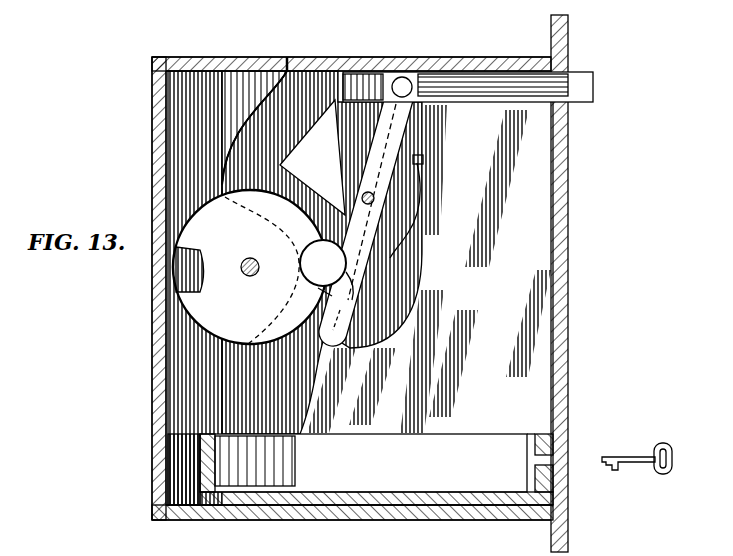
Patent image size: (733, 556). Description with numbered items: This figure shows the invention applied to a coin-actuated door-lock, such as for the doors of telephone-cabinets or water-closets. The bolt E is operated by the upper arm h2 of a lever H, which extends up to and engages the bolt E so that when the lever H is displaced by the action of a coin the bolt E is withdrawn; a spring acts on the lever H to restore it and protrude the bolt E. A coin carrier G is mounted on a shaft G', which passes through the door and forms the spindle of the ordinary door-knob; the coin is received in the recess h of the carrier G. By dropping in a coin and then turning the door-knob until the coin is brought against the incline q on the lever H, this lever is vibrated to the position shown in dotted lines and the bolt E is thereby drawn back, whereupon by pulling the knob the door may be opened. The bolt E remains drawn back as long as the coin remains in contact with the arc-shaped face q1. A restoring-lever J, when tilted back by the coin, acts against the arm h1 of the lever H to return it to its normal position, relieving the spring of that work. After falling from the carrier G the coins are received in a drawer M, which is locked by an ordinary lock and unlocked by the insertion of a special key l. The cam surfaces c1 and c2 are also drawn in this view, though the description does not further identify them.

The bolt E is at (468, 87).
The cam edge c1 is at (254, 128).
The cam body c2 is at (322, 252).
The carrier G is at (250, 267).
The shaft G' is at (251, 282).
The recess h is at (301, 258).
The incline q is at (349, 270).
The arc-shaped face q1 is at (332, 298).
The arm h1 is at (342, 308).
The upper arm h2 is at (372, 202).
The lever H is at (367, 210).
The restoring-lever J is at (405, 234).
The drawer M is at (376, 469).
The special key l is at (637, 452).